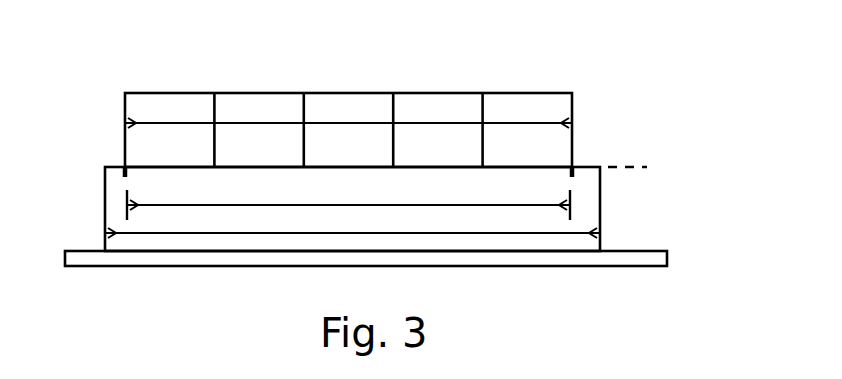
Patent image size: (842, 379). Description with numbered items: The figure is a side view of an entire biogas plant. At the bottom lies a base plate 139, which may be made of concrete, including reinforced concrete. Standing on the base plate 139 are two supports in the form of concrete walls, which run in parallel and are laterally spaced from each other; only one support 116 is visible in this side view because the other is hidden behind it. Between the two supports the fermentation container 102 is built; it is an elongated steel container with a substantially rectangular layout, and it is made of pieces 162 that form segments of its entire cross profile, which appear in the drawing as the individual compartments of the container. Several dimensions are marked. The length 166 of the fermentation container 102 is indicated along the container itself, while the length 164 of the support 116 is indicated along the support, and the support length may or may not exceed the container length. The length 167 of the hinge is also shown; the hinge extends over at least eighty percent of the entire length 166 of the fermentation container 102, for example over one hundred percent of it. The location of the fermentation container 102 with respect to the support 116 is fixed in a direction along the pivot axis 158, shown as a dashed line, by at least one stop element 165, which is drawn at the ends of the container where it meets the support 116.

The fermentation container 102 is at (580, 98).
The pieces 162 is at (523, 92).
The length of the fermentation container 166 is at (143, 99).
The stop element 165 is at (575, 160).
The pivot axis 158 is at (647, 167).
The support 116 is at (600, 207).
The length of the hinge 167 is at (210, 200).
The length of the support 164 is at (235, 235).
The base plate 139 is at (580, 255).